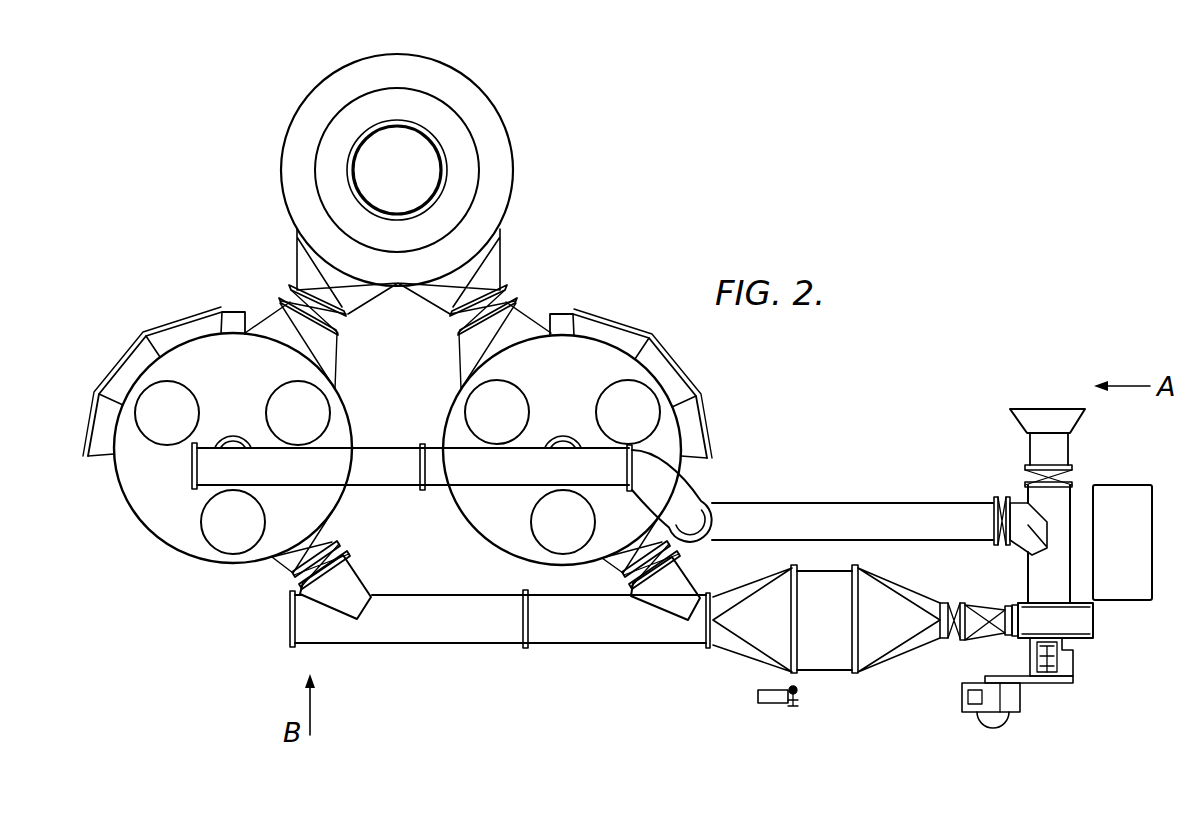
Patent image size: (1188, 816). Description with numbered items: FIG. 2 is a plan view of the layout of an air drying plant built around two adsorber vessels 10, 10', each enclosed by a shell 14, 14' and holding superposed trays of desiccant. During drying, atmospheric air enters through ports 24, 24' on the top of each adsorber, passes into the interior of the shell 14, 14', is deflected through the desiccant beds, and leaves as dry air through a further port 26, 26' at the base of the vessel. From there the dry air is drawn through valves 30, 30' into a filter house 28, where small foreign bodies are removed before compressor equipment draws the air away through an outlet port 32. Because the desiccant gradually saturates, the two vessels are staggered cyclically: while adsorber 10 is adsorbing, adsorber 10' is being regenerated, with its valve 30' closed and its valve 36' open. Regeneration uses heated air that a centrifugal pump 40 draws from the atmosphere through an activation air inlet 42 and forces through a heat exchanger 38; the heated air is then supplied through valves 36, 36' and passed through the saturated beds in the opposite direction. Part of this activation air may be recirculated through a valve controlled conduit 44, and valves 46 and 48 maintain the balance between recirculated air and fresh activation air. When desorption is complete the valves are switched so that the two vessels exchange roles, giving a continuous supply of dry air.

The adsorber vessel 10 is at (213, 445).
The adsorber vessel 10' is at (547, 449).
The shell 14 is at (213, 435).
The shell 14' is at (547, 437).
The ports 24 is at (232, 395).
The ports 24' is at (562, 395).
The port 26 is at (342, 337).
The port 26' is at (446, 346).
The filter house 28 is at (472, 140).
The valve 30 is at (279, 323).
The valve 30' is at (511, 317).
The outlet port 32 is at (428, 172).
The valve 36 is at (294, 565).
The valve 36' is at (615, 601).
The heat exchanger 38 is at (815, 636).
The centrifugal pump 40 is at (1072, 622).
The activation air inlet 42 is at (1043, 420).
The valve controlled conduit 44 is at (867, 508).
The valve 46 is at (996, 541).
The valve 48 is at (1067, 482).